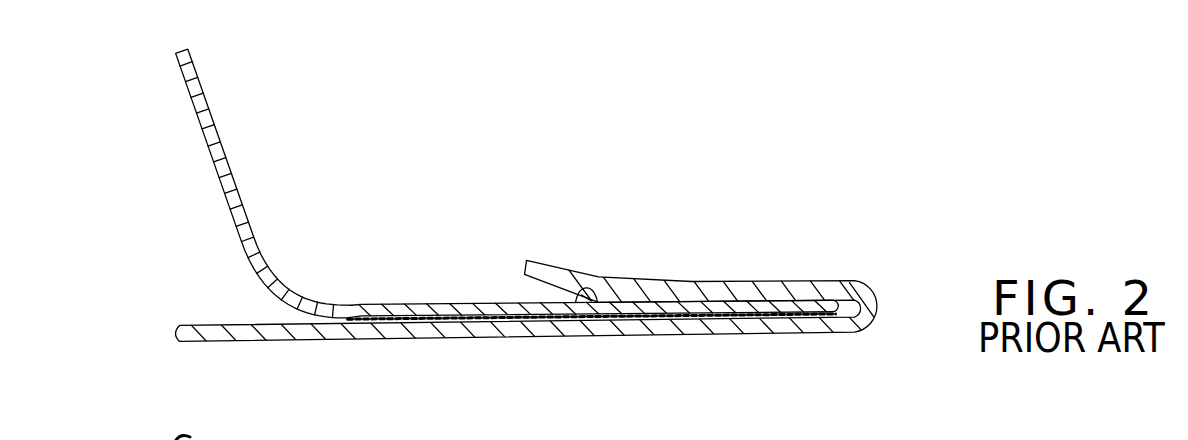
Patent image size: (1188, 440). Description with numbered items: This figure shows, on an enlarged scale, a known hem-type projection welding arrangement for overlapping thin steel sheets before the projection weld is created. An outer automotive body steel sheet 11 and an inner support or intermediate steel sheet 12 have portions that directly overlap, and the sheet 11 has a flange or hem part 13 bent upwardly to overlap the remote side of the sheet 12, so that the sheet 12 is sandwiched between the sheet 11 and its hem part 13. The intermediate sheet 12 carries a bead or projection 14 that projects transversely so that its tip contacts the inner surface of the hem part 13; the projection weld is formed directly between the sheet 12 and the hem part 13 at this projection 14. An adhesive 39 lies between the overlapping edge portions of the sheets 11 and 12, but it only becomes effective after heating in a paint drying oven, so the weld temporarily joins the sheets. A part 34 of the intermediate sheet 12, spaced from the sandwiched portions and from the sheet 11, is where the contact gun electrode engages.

The steel sheet 11 is at (487, 333).
The intermediate steel sheet 12 is at (428, 305).
The hem part 13 is at (732, 284).
The projection 14 is at (578, 291).
The part of intermediate sheet 34 is at (196, 78).
The adhesive 39 is at (370, 325).